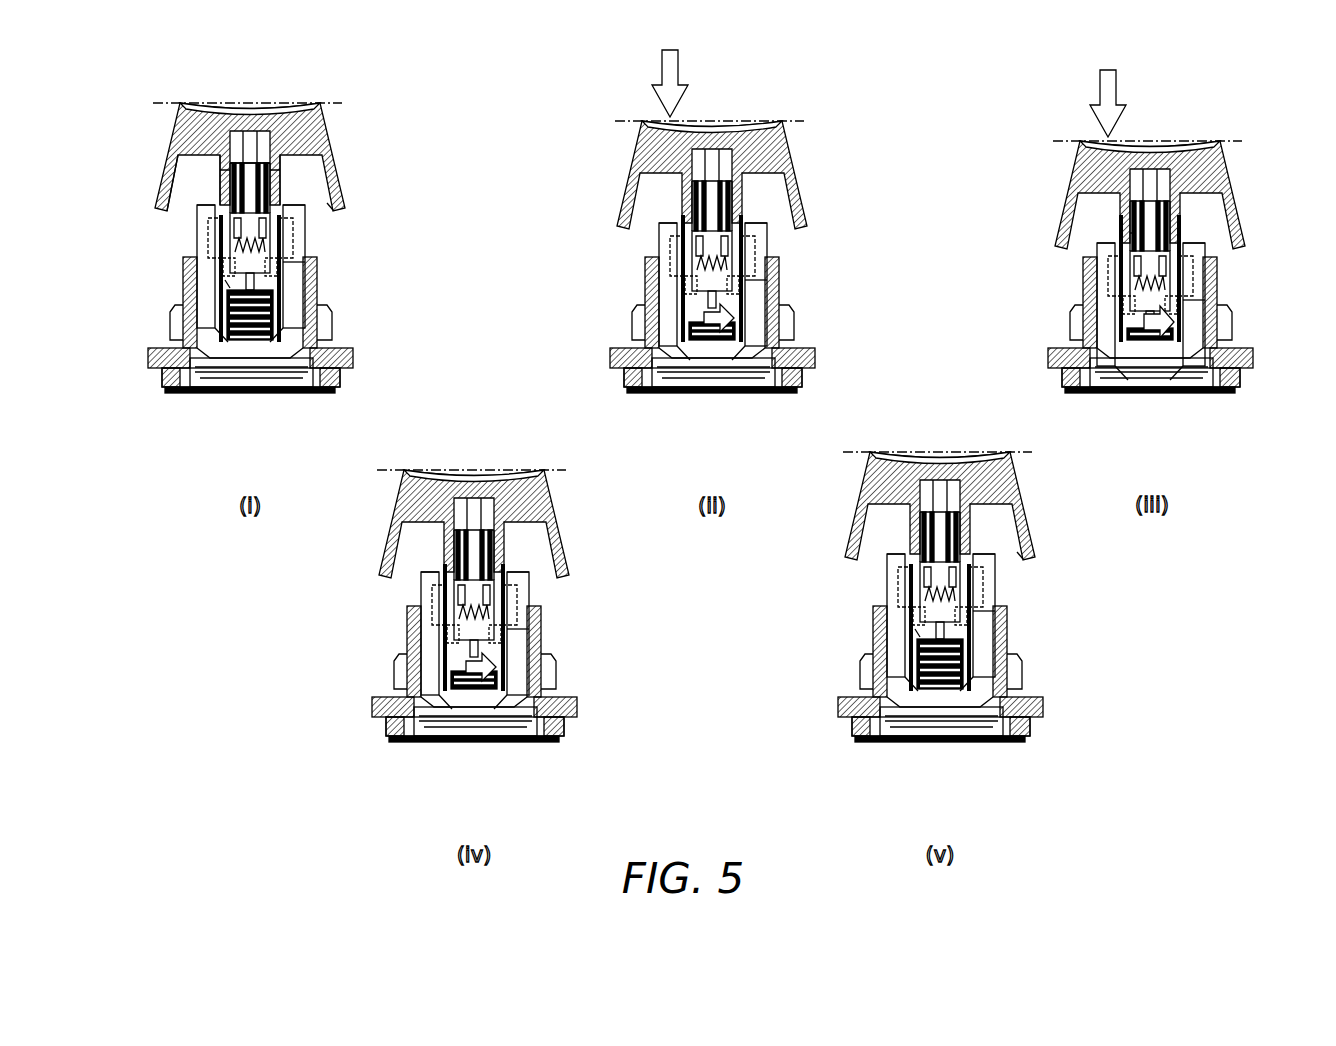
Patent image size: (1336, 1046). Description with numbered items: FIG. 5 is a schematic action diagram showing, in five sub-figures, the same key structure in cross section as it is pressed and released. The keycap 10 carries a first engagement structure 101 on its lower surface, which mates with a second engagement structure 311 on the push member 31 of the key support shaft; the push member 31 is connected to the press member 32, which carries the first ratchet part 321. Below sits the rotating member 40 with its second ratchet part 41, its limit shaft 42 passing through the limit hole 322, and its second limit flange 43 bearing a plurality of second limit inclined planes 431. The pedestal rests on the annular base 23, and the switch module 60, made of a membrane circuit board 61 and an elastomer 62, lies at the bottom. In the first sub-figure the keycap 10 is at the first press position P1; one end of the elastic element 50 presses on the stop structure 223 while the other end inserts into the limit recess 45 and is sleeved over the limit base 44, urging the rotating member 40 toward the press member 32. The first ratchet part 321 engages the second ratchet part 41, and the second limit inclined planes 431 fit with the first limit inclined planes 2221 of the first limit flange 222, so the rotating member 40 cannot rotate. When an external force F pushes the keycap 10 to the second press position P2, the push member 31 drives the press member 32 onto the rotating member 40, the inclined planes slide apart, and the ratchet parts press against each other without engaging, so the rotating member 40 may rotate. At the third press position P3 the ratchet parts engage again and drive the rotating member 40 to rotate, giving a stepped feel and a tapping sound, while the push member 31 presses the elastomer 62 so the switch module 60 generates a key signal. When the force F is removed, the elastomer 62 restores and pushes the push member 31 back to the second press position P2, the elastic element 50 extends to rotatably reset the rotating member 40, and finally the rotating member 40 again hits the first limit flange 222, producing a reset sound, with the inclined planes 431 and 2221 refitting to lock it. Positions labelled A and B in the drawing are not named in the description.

The keycap 10 is at (700, 313).
The first engagement structure 101 is at (595, 291).
The annular base 23 is at (278, 374).
The push member 31 is at (299, 178).
The second engagement structure 311 is at (194, 148).
The press member 32 is at (655, 410).
The first ratchet part 321 is at (648, 423).
The limit hole 322 is at (163, 183).
The rotating member 40 is at (669, 456).
The second ratchet part 41 is at (659, 458).
The limit shaft 42 is at (200, 163).
The second limit flange 43 is at (736, 457).
The second limit inclined planes 431 is at (780, 460).
The limit base 44 is at (573, 497).
The limit recess 45 is at (529, 473).
The first limit flange 222 is at (748, 401).
The first limit inclined planes 2221 is at (748, 421).
The stop structure 223 is at (677, 564).
The elastic element 50 is at (700, 534).
The switch module 60 is at (700, 593).
The membrane circuit board 61 is at (705, 579).
The elastomer 62 is at (701, 581).
The position A is at (1082, 214).
The position B is at (698, 369).
The external force F is at (889, 81).
The first press position P1 is at (610, 280).
The second press position P2 is at (609, 303).
The third press position P3 is at (1164, 148).